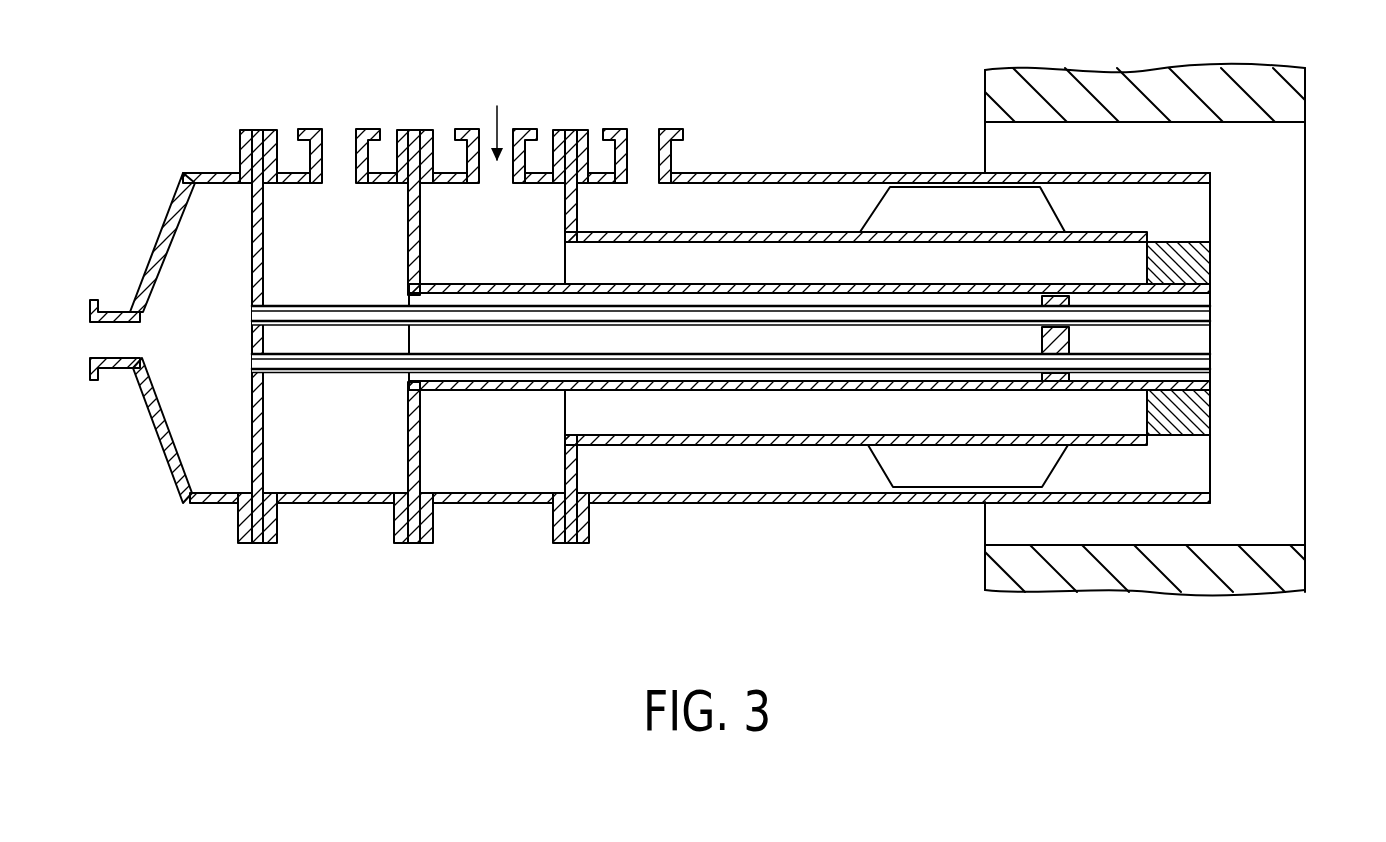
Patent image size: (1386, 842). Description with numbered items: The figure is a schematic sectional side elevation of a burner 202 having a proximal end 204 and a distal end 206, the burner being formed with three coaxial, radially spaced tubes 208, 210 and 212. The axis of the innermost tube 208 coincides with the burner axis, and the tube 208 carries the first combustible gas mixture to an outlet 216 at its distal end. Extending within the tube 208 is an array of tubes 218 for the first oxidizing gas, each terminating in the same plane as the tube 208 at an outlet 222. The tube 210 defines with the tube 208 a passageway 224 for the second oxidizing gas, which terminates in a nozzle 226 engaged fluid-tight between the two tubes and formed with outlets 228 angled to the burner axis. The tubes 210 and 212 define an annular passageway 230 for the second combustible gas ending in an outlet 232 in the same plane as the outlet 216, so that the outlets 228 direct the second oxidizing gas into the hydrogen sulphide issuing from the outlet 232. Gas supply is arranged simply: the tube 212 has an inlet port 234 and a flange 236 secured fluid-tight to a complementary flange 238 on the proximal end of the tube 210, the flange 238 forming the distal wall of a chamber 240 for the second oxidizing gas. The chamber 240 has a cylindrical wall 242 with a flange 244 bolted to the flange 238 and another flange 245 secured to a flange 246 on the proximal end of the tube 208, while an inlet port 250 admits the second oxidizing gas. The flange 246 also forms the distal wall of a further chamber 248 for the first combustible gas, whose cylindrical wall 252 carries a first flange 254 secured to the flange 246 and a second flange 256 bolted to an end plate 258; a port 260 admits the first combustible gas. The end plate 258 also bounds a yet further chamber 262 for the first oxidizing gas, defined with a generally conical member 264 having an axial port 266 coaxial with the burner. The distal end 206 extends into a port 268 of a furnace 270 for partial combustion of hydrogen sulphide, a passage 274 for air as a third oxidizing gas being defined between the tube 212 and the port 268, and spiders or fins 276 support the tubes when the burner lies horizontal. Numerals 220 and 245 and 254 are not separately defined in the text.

The burner 202 is at (675, 588).
The proximal end 204 is at (163, 528).
The distal end 206 is at (1318, 262).
The tube 208 is at (752, 392).
The tube 210 is at (799, 445).
The tube 212 is at (737, 173).
The outlet 216 is at (1212, 295).
The tubes 218 is at (355, 305).
The tube wall 220 is at (538, 310).
The outlet 222 is at (1212, 363).
The passageway 224 is at (868, 418).
The nozzle 226 is at (1212, 400).
The outlets 228 is at (1207, 424).
The annular passageway 230 is at (622, 482).
The outlet 232 is at (1212, 206).
The inlet port 234 is at (670, 129).
The flange 236 is at (584, 544).
The flange 238 is at (576, 129).
The chamber 240 is at (498, 244).
The cylindrical wall 242 is at (487, 493).
The flange 244 is at (556, 544).
The flange piece 245 is at (430, 545).
The flange 246 is at (412, 544).
The chamber 248 is at (354, 244).
The inlet port 250 is at (487, 111).
The cylindrical wall 252 is at (324, 503).
The top flange 254 is at (425, 130).
The flange 256 is at (262, 130).
The end plate 258 is at (252, 544).
The port 260 is at (346, 130).
The chamber 262 is at (221, 284).
The conical member 264 is at (150, 420).
The axial port 266 is at (118, 333).
The port 268 is at (1283, 545).
The furnace 270 is at (1348, 651).
The passage 274 is at (1095, 535).
The spiders or fins 276 is at (918, 195).